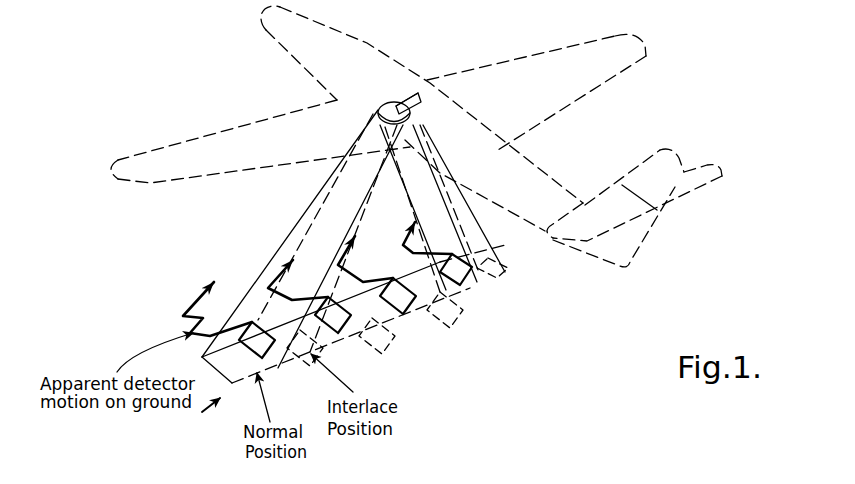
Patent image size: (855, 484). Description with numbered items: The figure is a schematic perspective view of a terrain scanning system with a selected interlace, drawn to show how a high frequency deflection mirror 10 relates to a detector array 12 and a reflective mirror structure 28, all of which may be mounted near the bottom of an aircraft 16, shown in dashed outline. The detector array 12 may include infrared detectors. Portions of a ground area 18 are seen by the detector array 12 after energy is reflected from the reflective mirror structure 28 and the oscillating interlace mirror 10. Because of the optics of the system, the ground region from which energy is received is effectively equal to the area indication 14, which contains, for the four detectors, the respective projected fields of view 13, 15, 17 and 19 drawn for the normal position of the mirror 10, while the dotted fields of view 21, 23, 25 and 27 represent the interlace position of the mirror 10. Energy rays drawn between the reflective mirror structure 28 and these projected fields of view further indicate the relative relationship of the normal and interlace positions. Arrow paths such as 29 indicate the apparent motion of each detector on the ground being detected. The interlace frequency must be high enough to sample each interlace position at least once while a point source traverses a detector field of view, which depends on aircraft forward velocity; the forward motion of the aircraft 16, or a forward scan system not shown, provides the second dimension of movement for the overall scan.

The high frequency deflection mirror 10 is at (378, 147).
The detector array 12 is at (407, 98).
The reflective mirror structure 28 is at (404, 115).
The aircraft 16 is at (384, 50).
The ground area 18 is at (100, 356).
The arrow path 29 is at (193, 300).
The projected field of view 13 is at (251, 383).
The projected field of view 15 is at (338, 334).
The projected field of view 17 is at (403, 314).
The projected field of view 19 is at (463, 291).
The dotted field of view 21 is at (298, 352).
The dotted field of view 23 is at (368, 320).
The dotted field of view 25 is at (436, 295).
The dotted field of view 27 is at (490, 276).
The area indication 14 is at (207, 419).